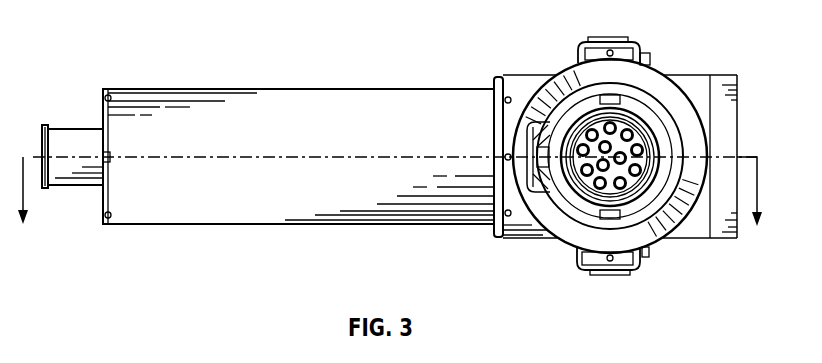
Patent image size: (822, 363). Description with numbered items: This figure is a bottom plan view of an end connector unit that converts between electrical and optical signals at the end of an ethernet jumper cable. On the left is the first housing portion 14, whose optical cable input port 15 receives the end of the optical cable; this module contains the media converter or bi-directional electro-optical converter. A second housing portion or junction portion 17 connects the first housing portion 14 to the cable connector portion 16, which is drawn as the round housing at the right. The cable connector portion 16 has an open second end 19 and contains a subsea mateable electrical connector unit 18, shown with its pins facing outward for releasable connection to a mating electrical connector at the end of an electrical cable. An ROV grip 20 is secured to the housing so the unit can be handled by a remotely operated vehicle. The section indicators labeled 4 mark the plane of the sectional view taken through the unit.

The section line 4- 4 is at (390, 206).
The first housing portion 14 is at (280, 92).
The optical cable input port 15 is at (83, 137).
The cable connector portion 16 is at (633, 60).
The second housing portion 17 is at (530, 225).
The subsea mateable electrical connector unit 18 is at (633, 197).
The open second end 19 is at (628, 102).
The ROV grip 20 is at (610, 275).